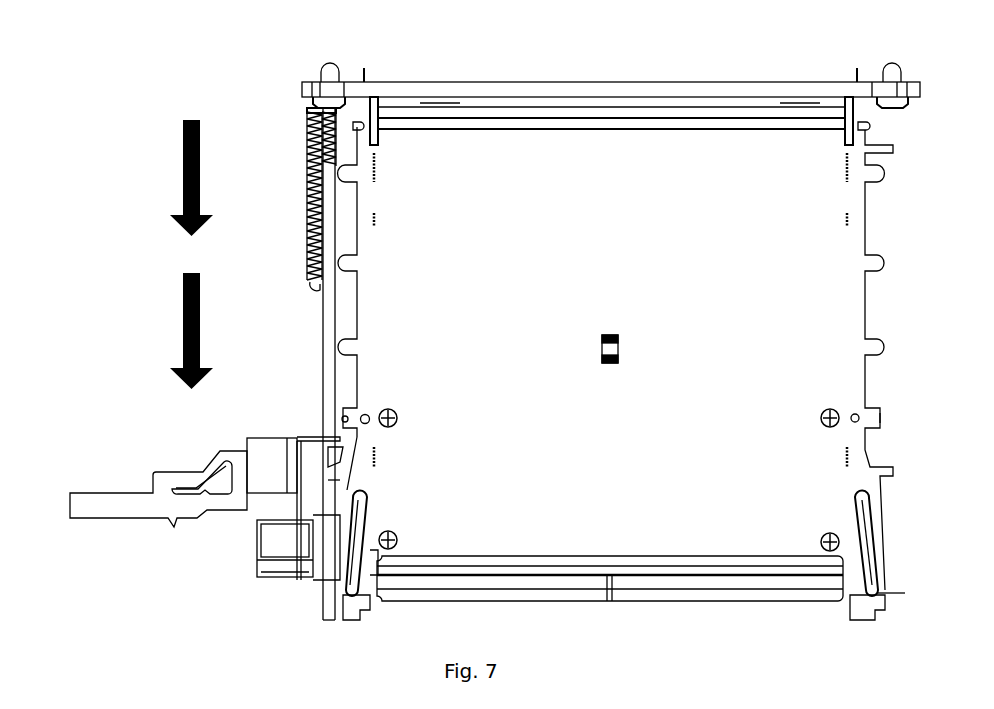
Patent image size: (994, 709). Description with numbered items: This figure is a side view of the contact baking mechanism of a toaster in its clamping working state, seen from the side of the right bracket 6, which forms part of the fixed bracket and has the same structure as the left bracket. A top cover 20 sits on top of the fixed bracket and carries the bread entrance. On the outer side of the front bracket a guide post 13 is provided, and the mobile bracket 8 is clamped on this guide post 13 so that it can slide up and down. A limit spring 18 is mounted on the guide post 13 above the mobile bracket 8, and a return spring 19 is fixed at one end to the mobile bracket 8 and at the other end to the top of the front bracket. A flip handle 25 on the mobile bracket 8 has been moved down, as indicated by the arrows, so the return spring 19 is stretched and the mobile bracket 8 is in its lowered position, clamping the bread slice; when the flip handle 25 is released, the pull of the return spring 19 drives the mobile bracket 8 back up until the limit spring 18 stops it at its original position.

The right bracket 6 is at (846, 311).
The mobile bracket 8 is at (310, 468).
The guide post 13 is at (327, 372).
The limit spring 18 is at (312, 109).
The return spring 19 is at (312, 168).
The top cover 20 is at (400, 94).
The flip handle 25 is at (107, 513).